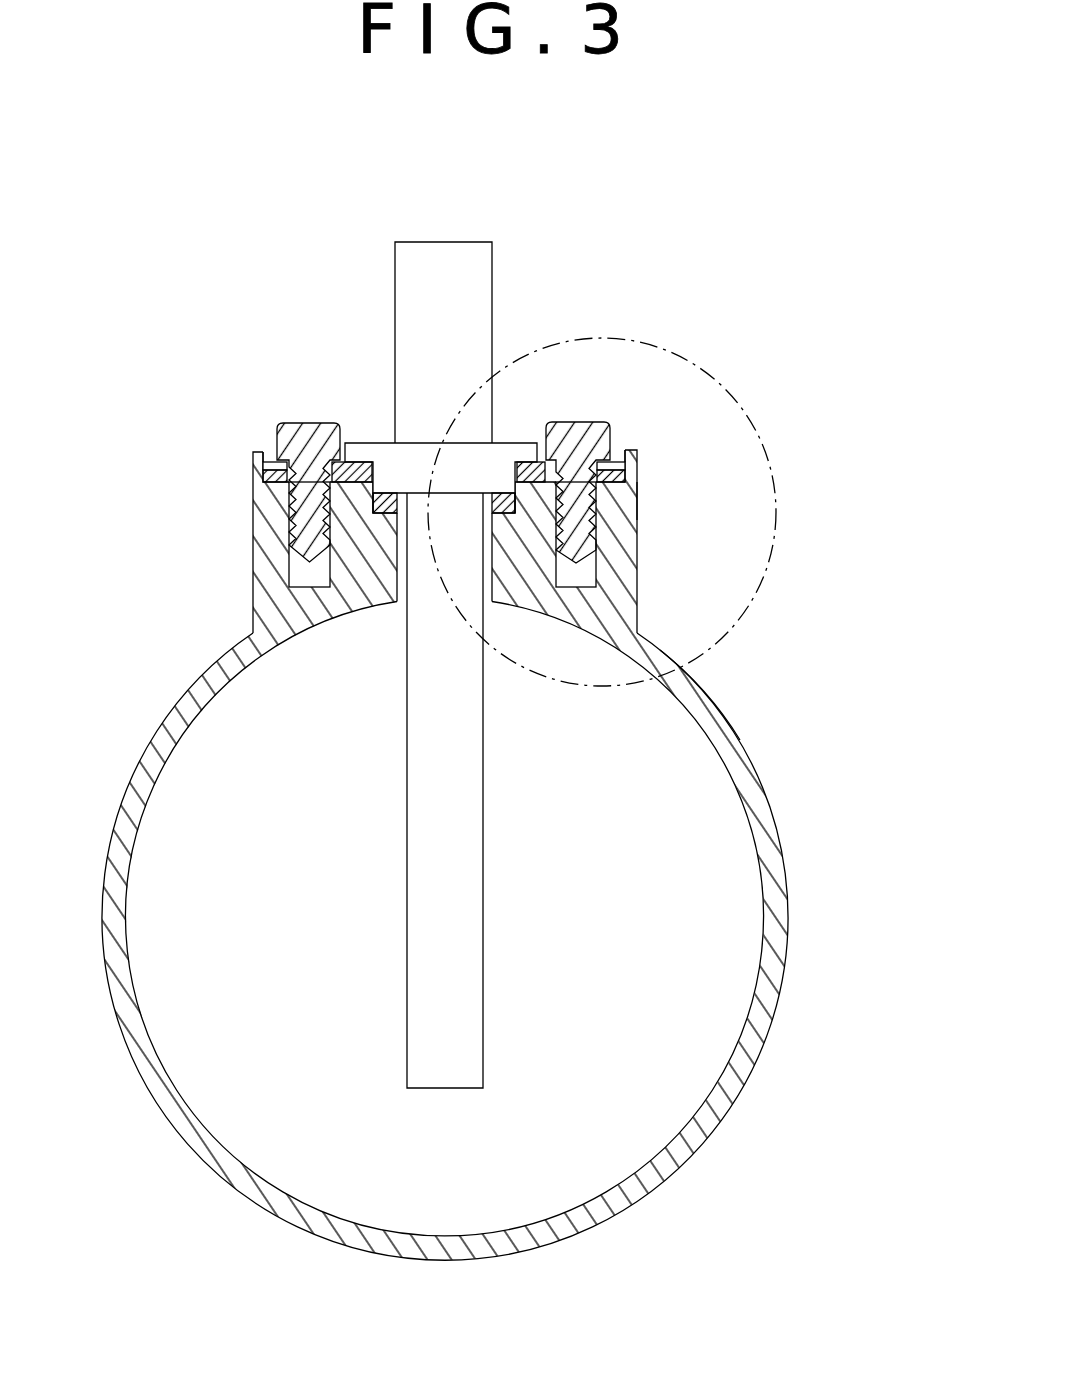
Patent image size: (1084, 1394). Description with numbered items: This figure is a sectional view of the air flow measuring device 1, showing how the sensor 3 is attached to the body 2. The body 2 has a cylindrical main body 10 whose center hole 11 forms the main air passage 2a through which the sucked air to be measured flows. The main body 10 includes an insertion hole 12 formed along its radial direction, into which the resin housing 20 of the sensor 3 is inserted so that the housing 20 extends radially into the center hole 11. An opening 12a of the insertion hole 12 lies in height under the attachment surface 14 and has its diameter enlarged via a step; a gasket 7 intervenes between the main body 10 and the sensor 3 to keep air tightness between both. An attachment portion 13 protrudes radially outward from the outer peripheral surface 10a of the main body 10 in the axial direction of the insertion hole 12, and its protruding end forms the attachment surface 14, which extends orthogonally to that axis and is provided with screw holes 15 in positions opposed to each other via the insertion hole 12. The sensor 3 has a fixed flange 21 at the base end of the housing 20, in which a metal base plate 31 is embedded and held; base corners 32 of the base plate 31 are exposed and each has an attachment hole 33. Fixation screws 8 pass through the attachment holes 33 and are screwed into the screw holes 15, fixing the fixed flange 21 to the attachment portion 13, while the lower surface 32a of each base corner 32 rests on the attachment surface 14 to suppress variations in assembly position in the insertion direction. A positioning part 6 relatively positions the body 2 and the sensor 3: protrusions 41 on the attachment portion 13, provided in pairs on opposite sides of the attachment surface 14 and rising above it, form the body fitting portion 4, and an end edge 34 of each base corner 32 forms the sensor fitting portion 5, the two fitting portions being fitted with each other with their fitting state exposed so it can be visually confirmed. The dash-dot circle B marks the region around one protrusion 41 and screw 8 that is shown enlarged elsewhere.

The air flow measuring device 1 is at (518, 619).
The body 2 is at (504, 801).
The main air passage 2a is at (512, 919).
The sensor 3 is at (503, 291).
The body fitting portion 4 is at (490, 406).
The sensor fitting portion 5 is at (490, 440).
The positioning part 6 is at (492, 406).
The gasket 7 is at (494, 491).
The fixation screws 8 is at (312, 424).
The main body 10 is at (776, 918).
The outer peripheral surface 10a is at (707, 697).
The center hole 11 is at (629, 1094).
The insertion hole 12 is at (397, 568).
The opening 12a is at (405, 497).
The attachment portion 13 is at (433, 535).
The attachment surface 14 is at (355, 460).
The screw holes 15 is at (290, 560).
The housing 20 is at (488, 862).
The fixed flange 21 is at (413, 463).
The base plate 31 is at (538, 500).
The base corner 32 is at (270, 457).
The lower surface 32a is at (638, 502).
The attachment hole 33 is at (253, 500).
The end edge 34 is at (257, 477).
The protrusions 41 is at (257, 463).
The enlarged detail region B is at (777, 532).